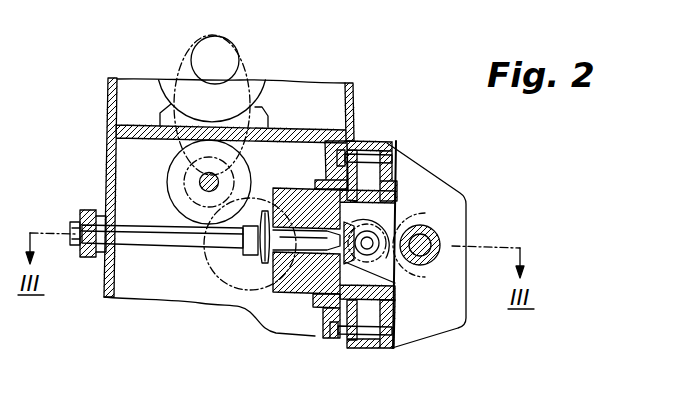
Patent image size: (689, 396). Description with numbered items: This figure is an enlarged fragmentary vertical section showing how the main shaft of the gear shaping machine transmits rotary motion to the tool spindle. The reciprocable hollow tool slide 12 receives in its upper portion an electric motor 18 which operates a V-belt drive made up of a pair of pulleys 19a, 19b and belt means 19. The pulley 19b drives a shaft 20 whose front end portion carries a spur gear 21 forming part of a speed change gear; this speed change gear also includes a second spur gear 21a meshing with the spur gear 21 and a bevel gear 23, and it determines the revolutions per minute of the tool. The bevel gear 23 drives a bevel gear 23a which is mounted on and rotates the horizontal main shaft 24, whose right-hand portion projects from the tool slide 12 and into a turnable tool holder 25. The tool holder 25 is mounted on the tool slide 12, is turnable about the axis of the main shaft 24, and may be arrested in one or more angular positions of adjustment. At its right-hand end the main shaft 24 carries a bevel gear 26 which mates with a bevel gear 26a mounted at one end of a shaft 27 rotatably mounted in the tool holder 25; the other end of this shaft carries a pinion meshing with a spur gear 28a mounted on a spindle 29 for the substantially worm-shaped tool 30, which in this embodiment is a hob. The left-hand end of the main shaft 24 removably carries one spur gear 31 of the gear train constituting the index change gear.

The tool slide 12 is at (106, 299).
The electric motor 18 is at (188, 85).
The belt means 19 is at (248, 72).
The pulley 19a is at (238, 47).
The pulley 19b is at (246, 172).
The shaft 20 is at (199, 183).
The spur gear 21 is at (252, 180).
The second spur gear 21a is at (252, 305).
The bevel gear 23 is at (240, 244).
The bevel gear 23a is at (266, 263).
The main shaft 24 is at (175, 245).
The tool holder 25 is at (372, 150).
The bevel gear 26 is at (381, 257).
The bevel gear 26a is at (360, 230).
The shaft 27 is at (424, 212).
The spur gear 28a is at (426, 245).
The spindle 29 is at (430, 240).
The tool 30 is at (432, 258).
The spur gear 31 is at (90, 216).